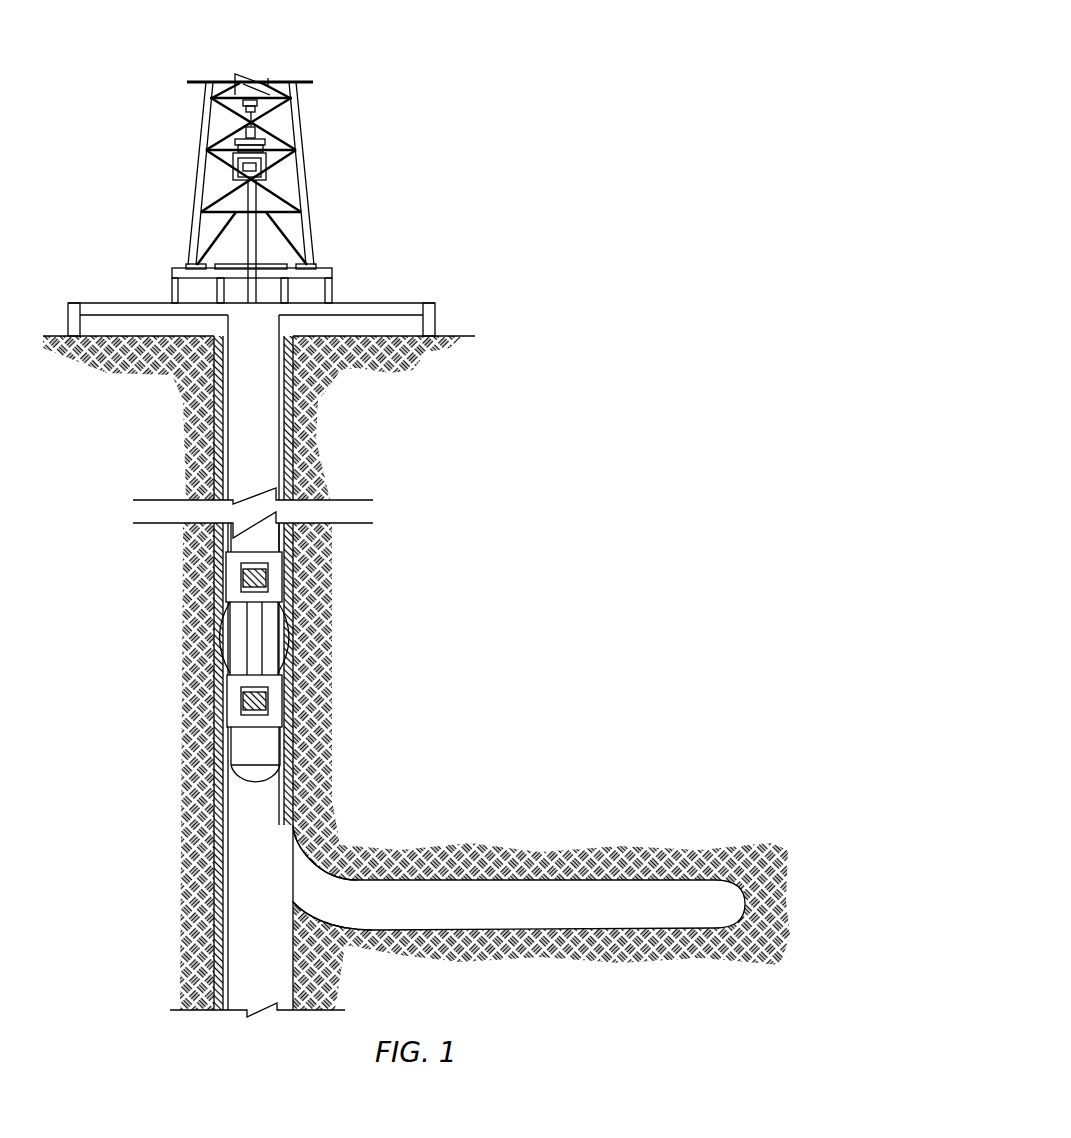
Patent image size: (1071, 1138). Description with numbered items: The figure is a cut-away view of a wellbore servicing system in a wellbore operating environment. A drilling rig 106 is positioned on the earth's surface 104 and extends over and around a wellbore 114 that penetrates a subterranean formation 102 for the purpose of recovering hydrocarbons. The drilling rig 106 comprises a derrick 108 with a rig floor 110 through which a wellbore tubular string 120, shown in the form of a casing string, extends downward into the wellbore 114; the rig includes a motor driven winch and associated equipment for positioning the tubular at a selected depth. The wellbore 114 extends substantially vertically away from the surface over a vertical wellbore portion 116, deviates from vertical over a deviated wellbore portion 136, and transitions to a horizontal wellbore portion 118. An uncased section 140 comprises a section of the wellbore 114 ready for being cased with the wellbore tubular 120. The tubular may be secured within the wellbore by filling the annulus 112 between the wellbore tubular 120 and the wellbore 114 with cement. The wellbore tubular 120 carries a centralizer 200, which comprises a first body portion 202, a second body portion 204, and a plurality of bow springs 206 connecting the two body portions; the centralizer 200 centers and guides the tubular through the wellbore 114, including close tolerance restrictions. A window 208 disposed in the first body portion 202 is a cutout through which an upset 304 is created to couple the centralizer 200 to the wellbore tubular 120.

The subterranean formation 102 is at (337, 360).
The earth's surface 104 is at (452, 335).
The drilling rig 106 is at (358, 153).
The derrick 108 is at (204, 127).
The rig floor 110 is at (175, 268).
The annulus 112 is at (226, 402).
The wellbore 114 is at (215, 445).
The vertical wellbore portion 116 is at (288, 596).
The horizontal wellbore portion 118 is at (420, 933).
The wellbore tubular string 120 is at (282, 540).
The deviated wellbore portion 136 is at (322, 848).
The uncased section 140 is at (493, 863).
The centralizer 200 is at (259, 667).
The first body portion 202 is at (257, 701).
The second body portion 204 is at (226, 577).
The bow springs 206 is at (220, 662).
The window 208 is at (258, 688).
The upset 304 is at (268, 703).